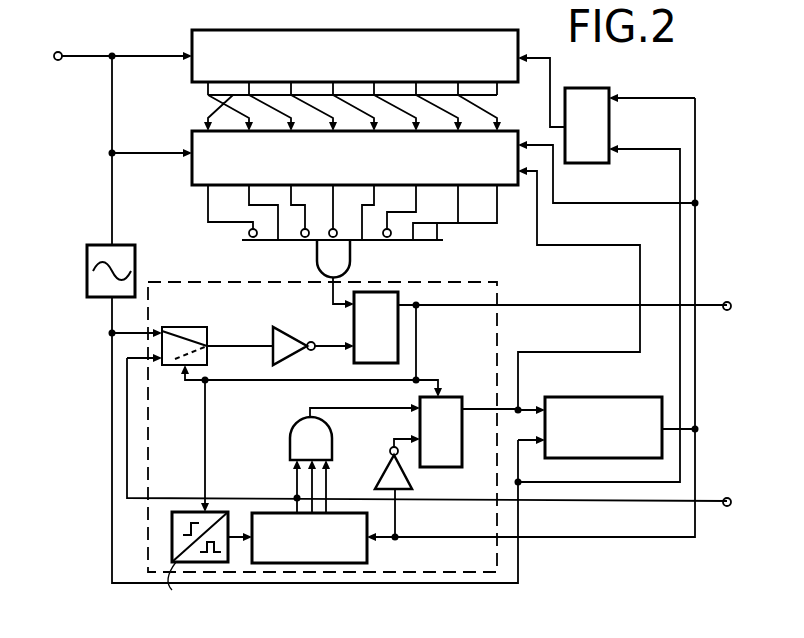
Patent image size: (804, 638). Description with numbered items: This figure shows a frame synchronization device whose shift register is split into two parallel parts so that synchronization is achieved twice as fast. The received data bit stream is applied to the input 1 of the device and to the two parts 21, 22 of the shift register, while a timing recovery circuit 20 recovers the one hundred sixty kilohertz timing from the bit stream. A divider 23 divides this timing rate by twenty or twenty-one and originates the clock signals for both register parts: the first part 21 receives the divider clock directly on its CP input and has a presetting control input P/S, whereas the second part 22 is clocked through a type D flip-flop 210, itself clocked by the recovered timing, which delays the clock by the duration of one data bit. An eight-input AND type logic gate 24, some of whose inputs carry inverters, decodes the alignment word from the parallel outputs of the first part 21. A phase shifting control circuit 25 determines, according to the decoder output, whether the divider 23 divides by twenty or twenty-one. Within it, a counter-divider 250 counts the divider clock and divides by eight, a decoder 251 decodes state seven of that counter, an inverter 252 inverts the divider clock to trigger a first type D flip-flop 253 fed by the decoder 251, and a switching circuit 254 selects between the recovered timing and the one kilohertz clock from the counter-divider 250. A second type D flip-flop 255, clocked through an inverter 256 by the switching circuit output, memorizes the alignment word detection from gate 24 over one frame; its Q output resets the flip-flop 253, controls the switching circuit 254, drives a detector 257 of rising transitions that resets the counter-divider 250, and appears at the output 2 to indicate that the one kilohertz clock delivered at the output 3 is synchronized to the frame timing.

The input 1 is at (63, 52).
The output 2 is at (728, 301).
The output 3 is at (729, 496).
The timing recovery circuit 20 is at (135, 257).
The first part of the shift register 21 is at (199, 173).
The second part of the shift register 22 is at (255, 48).
The divider 23 is at (629, 406).
The AND type logic gate 24 is at (349, 262).
The phase shifting control circuit 25 is at (499, 328).
The type D flip-flop 210 is at (609, 122).
The counter-divider 250 is at (367, 552).
The decoder 251 is at (298, 438).
The inverter 252 is at (405, 475).
The first type D flip-flop 253 is at (411, 428).
The switching circuit 254 is at (205, 304).
The second type D flip-flop 255 is at (354, 326).
The inverter 256 is at (270, 327).
The detector 257 is at (191, 508).